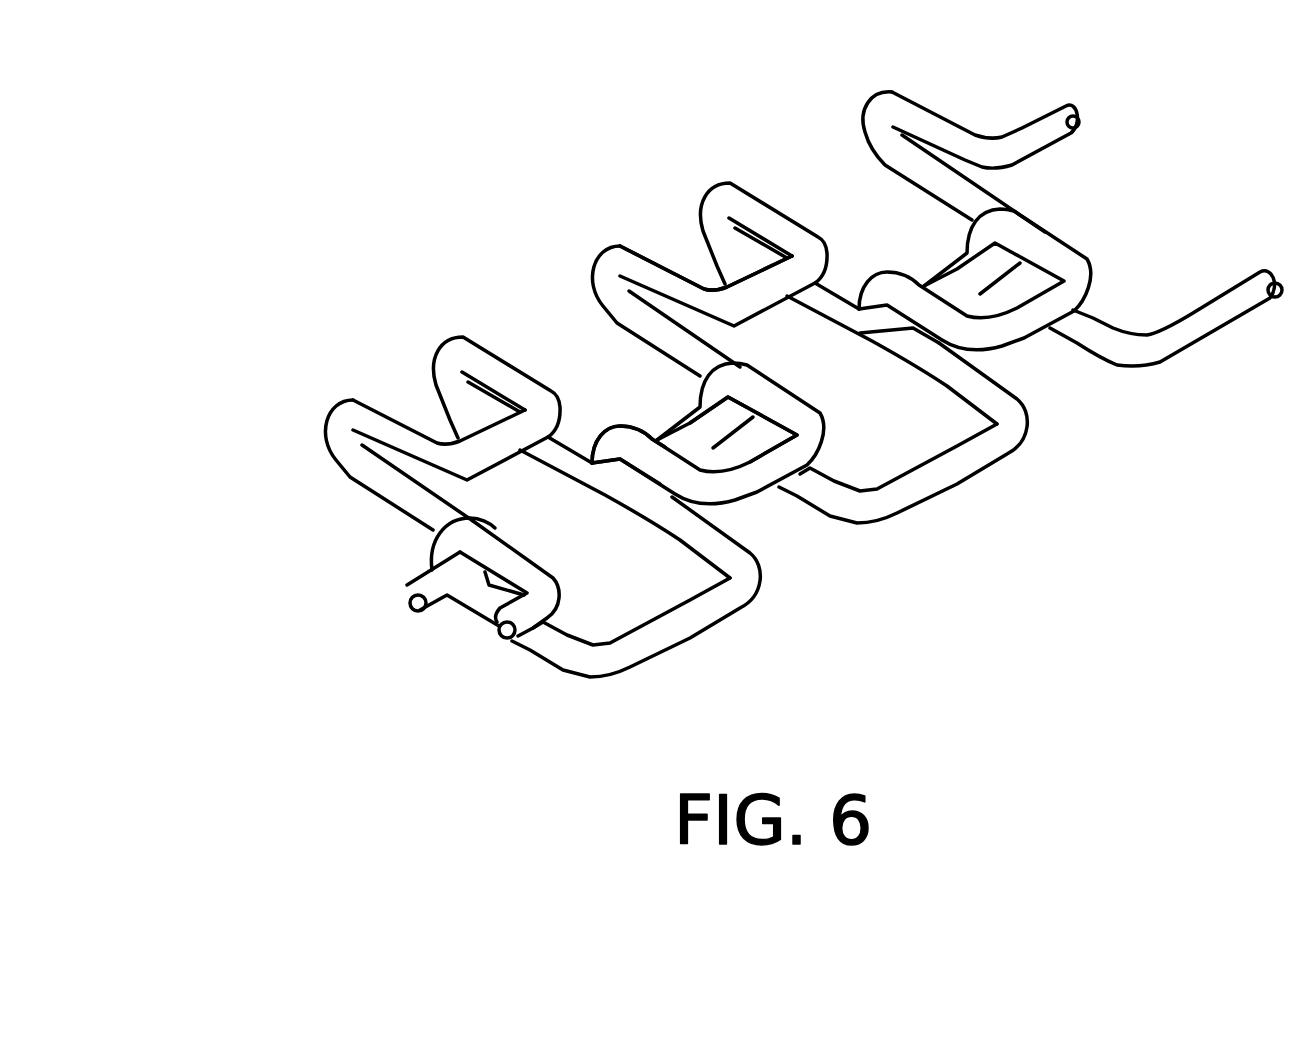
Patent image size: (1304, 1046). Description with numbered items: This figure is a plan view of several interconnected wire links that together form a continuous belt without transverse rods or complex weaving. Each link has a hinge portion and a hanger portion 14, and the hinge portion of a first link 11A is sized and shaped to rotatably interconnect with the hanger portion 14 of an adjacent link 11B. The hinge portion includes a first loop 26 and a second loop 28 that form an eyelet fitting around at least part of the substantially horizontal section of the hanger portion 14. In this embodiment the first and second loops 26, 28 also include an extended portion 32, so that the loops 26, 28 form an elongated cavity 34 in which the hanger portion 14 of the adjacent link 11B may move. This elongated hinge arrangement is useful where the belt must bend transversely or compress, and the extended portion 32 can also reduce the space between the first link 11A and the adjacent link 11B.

The first link 11A is at (341, 494).
The adjacent link 11B is at (508, 585).
The hanger portion 14 is at (655, 274).
The first loop 26 is at (538, 343).
The second loop 28 is at (694, 228).
The extended portion 32 is at (708, 270).
The cavity 34 is at (789, 450).